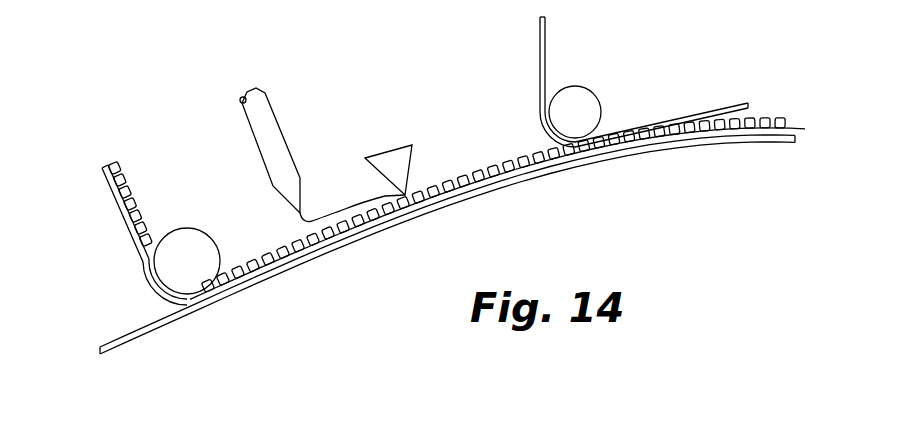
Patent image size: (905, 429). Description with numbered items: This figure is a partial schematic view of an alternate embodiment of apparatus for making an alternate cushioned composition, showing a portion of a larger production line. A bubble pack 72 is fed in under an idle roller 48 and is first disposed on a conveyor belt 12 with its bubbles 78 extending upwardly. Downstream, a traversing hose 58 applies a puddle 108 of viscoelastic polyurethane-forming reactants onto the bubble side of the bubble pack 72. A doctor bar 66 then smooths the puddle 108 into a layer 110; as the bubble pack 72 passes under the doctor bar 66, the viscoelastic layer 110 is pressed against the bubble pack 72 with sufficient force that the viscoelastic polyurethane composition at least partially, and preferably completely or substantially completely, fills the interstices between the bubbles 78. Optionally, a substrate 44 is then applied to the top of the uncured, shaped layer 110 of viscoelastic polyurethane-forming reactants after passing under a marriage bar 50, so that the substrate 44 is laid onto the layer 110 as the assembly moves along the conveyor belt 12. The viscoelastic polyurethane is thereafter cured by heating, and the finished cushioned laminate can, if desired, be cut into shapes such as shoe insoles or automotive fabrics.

The conveyor belt 12 is at (250, 287).
The bubble pack 72 is at (105, 180).
The bubbles 78 is at (131, 200).
The layer 110 is at (483, 168).
The idle roller 48 is at (199, 229).
The traversing hose 58 is at (275, 133).
The puddle 108 is at (362, 203).
The doctor bar 66 is at (397, 160).
The substrate 44 is at (547, 40).
The marriage bar 50 is at (585, 100).